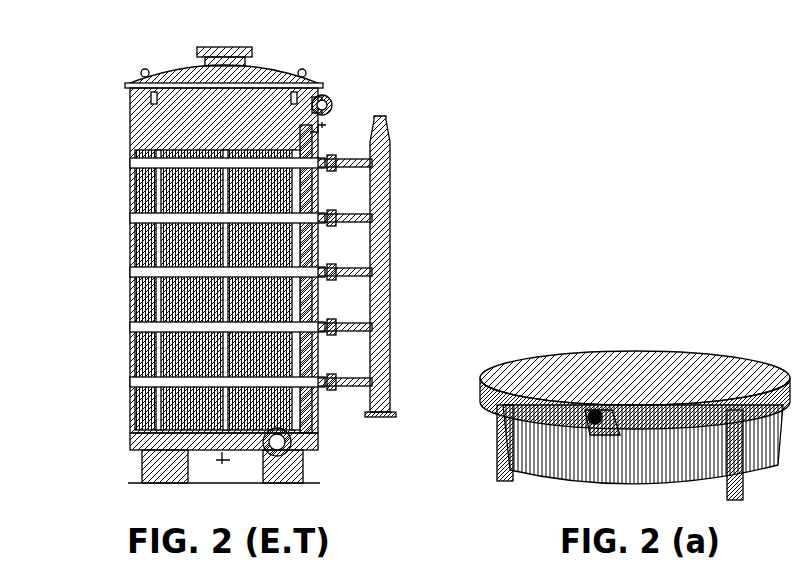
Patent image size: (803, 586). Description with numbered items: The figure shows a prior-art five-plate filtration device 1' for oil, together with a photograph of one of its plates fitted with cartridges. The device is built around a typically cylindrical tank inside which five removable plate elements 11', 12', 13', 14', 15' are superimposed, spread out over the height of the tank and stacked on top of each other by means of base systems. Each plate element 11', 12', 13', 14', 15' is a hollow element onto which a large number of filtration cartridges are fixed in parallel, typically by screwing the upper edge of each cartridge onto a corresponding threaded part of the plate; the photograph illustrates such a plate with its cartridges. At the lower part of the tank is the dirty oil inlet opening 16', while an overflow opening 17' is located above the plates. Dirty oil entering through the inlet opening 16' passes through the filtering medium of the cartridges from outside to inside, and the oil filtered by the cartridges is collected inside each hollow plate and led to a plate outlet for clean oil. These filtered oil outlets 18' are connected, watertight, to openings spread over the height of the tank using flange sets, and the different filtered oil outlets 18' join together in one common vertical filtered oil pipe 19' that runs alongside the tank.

The five-plate filtration device 1' is at (219, 254).
The plate element 11' is at (191, 177).
The plate element 12' is at (191, 234).
The plate element 13' is at (191, 288).
The plate element 14' is at (191, 343).
The plate element 15' is at (191, 398).
The dirty oil inlet opening 16' is at (316, 455).
The overflow opening 17' is at (350, 107).
The filtered oil outlets 18' is at (387, 272).
The filtered oil pipe 19' is at (408, 266).